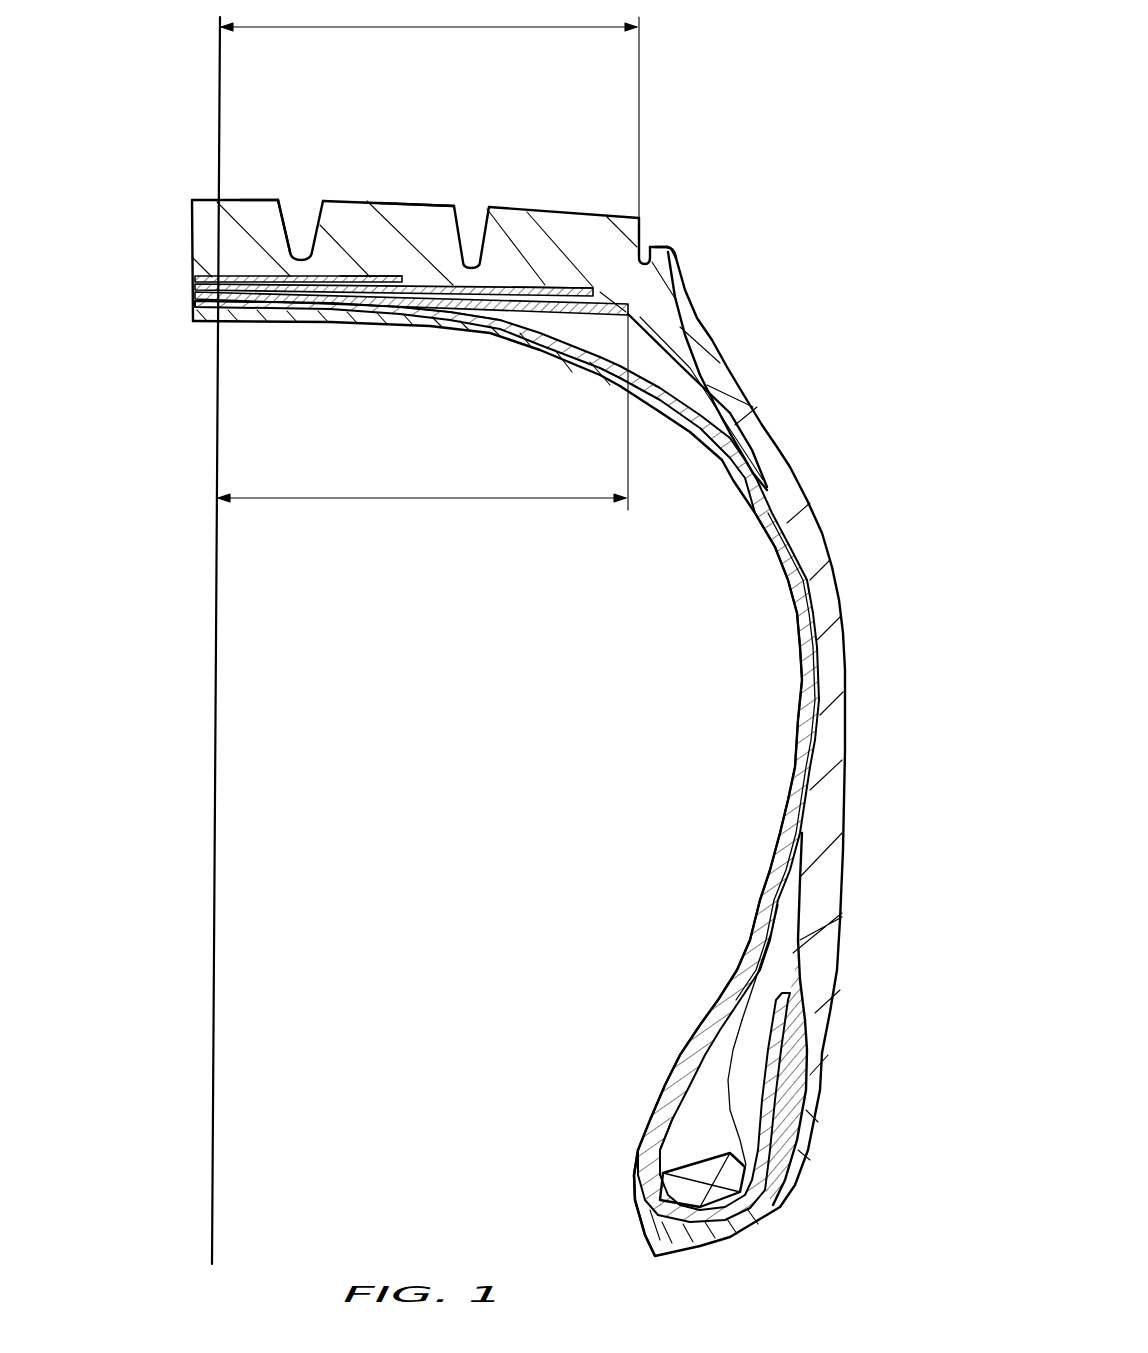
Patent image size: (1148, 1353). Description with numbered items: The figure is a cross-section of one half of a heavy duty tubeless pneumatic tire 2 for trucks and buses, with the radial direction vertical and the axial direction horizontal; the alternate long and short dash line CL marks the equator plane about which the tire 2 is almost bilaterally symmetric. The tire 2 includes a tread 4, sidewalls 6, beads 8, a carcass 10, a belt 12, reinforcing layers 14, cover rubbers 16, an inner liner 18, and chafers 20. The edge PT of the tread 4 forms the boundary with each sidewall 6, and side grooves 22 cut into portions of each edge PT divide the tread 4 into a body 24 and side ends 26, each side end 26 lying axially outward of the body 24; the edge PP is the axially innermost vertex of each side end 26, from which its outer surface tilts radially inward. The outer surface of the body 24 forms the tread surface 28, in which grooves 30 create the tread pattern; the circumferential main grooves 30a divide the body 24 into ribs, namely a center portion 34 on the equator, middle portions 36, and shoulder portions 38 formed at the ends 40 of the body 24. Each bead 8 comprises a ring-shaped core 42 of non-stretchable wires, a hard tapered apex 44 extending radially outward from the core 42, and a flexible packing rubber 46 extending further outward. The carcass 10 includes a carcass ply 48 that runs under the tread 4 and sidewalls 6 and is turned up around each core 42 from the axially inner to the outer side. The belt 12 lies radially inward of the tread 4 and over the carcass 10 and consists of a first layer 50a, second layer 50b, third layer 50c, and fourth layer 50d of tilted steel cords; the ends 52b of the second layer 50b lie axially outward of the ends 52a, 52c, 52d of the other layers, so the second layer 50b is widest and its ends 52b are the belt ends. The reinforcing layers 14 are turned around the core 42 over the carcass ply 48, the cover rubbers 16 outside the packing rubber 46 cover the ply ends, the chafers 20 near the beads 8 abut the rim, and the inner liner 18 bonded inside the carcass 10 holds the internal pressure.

The tire 2 is at (830, 103).
The tread 4 is at (420, 201).
The sidewalls 6 is at (810, 533).
The beads 8 is at (627, 920).
The carcass 10 is at (345, 309).
The belt 12 is at (351, 276).
The reinforcing layers 14 is at (700, 1170).
The cover rubbers 16 is at (787, 1047).
The inner liner 18 is at (796, 725).
The chafers 20 is at (643, 1227).
The side grooves 22 is at (647, 242).
The body 24 is at (266, 200).
The side ends 26 is at (667, 245).
The tread surface 28 is at (376, 200).
The grooves 30 is at (465, 224).
The main grooves 30a is at (284, 226).
The center portion 34 is at (240, 200).
The middle portions 36 is at (403, 201).
The shoulder portions 38 is at (537, 205).
The ends of the body 40 is at (642, 218).
The core 42 is at (650, 1100).
The apex 44 is at (707, 1077).
The packing rubber 46 is at (750, 995).
The carcass ply 48 is at (426, 366).
The first layer 50a is at (195, 302).
The second layer 50b is at (195, 294).
The third layer 50c is at (195, 287).
The fourth layer 50d is at (195, 280).
The ends of the first layer 52a is at (590, 317).
The ends of the second layer 52b is at (657, 315).
The ends of the third layer 52c is at (597, 293).
The ends of the fourth layer 52d is at (356, 275).
The alternate long and short dash line CL is at (220, 148).
The edge of the side end PP is at (660, 247).
The edge of the tread PT is at (677, 254).